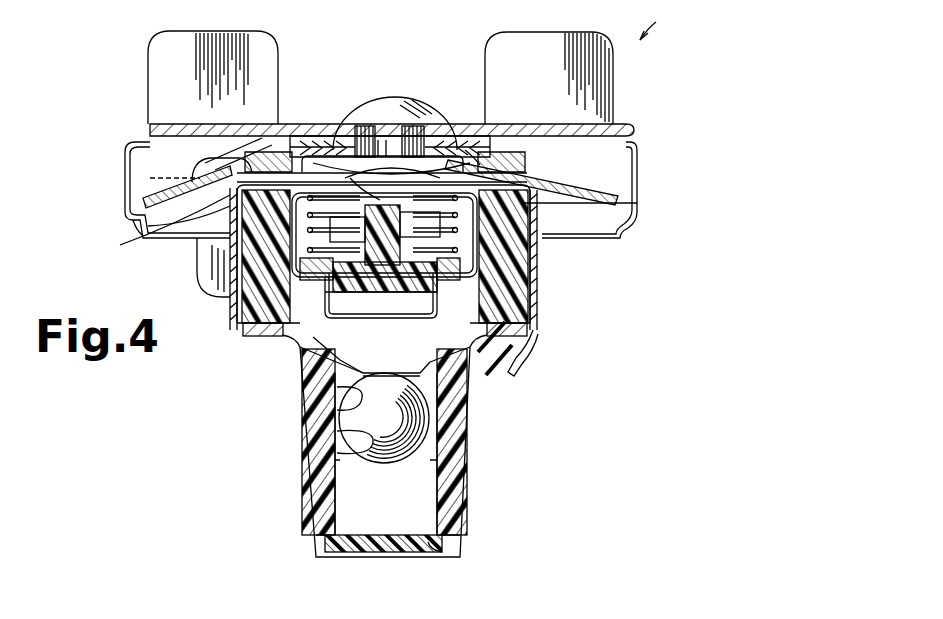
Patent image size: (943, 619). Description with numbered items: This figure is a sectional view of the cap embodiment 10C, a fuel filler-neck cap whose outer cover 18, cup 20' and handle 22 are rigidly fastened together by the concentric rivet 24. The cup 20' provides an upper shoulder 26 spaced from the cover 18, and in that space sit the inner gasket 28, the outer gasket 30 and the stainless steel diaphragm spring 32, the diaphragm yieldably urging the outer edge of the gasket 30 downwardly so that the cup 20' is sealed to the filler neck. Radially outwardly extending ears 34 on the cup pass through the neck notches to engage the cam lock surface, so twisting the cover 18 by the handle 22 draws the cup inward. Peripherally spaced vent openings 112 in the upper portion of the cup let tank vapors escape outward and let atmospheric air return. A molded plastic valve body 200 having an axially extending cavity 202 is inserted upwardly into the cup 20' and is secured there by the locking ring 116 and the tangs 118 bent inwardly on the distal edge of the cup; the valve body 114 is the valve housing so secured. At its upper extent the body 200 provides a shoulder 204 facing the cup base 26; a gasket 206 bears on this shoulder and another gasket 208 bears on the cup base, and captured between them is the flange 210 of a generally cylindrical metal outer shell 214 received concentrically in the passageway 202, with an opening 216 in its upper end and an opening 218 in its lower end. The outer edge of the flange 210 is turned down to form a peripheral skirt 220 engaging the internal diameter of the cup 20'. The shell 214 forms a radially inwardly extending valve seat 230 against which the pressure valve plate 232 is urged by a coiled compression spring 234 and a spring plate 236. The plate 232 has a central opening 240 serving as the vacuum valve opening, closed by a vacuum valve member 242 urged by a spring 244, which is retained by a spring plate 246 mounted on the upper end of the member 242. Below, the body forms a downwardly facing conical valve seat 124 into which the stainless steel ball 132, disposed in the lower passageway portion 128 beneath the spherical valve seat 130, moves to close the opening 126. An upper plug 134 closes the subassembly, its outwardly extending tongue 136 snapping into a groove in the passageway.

The cap embodiment 10C is at (667, 25).
The outer cover 18 is at (126, 180).
The cup 20' is at (596, 202).
The handle 22 is at (539, 48).
The rivet 24 is at (384, 100).
The shoulder 26 is at (470, 150).
The inner gasket 28 is at (275, 150).
The outer gasket 30 is at (638, 208).
The diaphragm spring 32 is at (190, 128).
The ears 34 is at (245, 232).
The vent openings 112 is at (316, 150).
The valve body 114 is at (463, 498).
The locking ring 116 is at (268, 338).
The tangs 118 is at (528, 360).
The conical valve seat 124 is at (352, 406).
The opening 126 is at (363, 374).
The lower passageway portion 128 is at (375, 432).
The spherical valve seat 130 is at (435, 472).
The ball 132 is at (355, 418).
The upper plug 134 is at (378, 546).
The tongue 136 is at (428, 548).
The molded plastic valve body 200 is at (512, 280).
The cavity 202 is at (537, 300).
The shoulder 204 is at (636, 190).
The gasket 206 is at (210, 215).
The gasket 208 is at (146, 218).
The flange 210 is at (205, 150).
The metal outer shell 214 is at (236, 255).
The upper opening 216 is at (348, 180).
The lower opening 218 is at (395, 318).
The peripheral skirt 220 is at (200, 250).
The valve seat 230 is at (262, 290).
The pressure valve plate 232 is at (520, 256).
The coiled compression spring 234 is at (430, 195).
The spring plate 236 is at (520, 242).
The central opening 240 is at (380, 178).
The vacuum valve member 242 is at (480, 352).
The spring 244 is at (352, 200).
The spring plate 246 is at (388, 108).